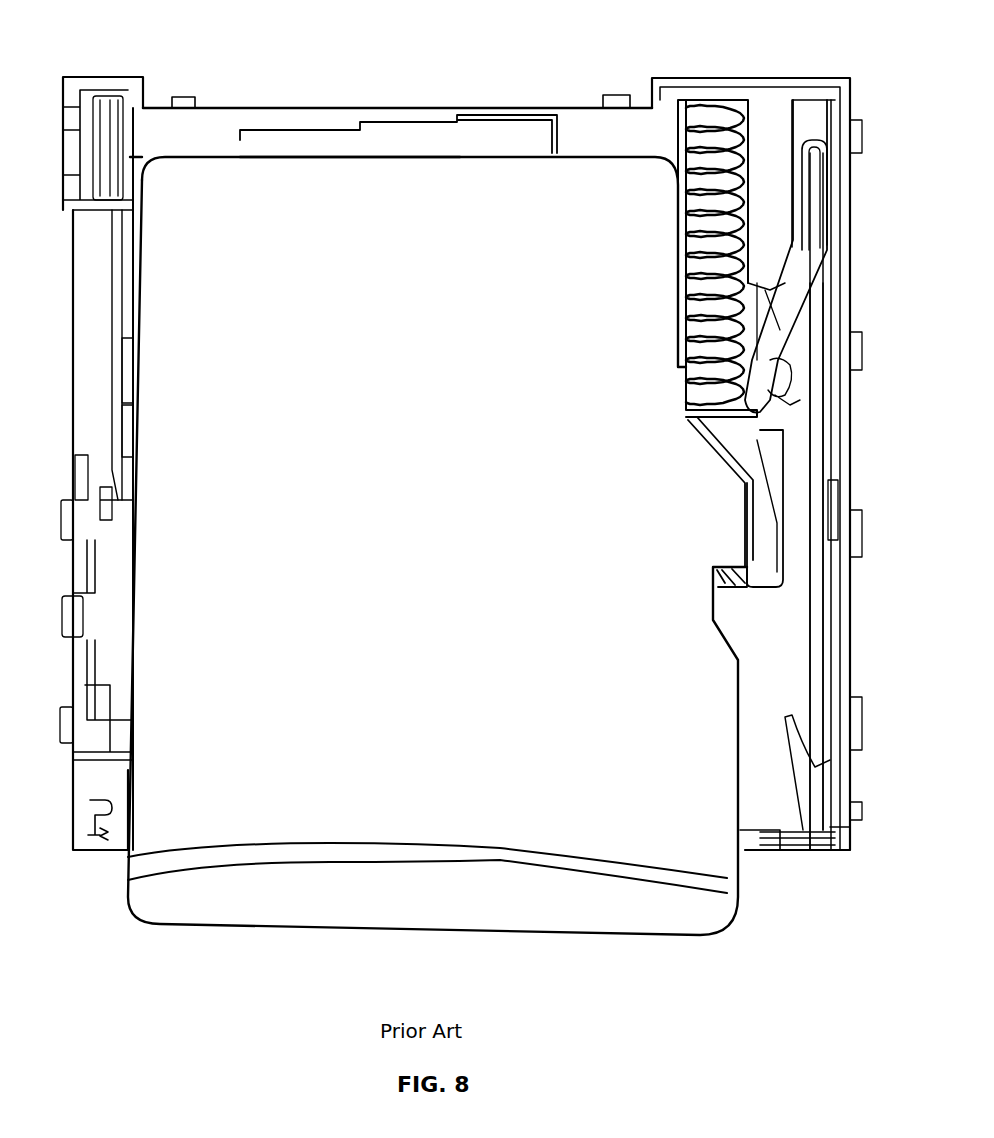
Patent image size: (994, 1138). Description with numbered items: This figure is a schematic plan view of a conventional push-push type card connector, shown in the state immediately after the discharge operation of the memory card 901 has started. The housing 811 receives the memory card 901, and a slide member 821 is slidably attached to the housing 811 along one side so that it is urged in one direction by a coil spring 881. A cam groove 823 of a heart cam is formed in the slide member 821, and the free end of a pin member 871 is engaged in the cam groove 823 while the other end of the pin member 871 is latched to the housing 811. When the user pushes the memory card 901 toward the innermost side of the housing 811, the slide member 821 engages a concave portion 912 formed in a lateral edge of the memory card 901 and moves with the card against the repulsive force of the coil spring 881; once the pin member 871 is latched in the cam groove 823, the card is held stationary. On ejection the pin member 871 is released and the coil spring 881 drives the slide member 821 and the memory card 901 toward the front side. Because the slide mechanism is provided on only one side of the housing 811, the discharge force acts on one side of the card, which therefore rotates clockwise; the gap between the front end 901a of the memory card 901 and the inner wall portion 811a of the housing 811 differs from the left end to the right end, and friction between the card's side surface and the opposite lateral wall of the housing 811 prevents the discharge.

The housing 811 is at (830, 19).
The inner wall portion 811a is at (235, 120).
The coil spring 881 is at (688, 137).
The cam groove 823 is at (810, 276).
The slide member 821 is at (777, 570).
The pin member 871 is at (820, 498).
The memory card 901 is at (271, 946).
The front end 901a is at (488, 158).
The concave portion 912 is at (738, 567).